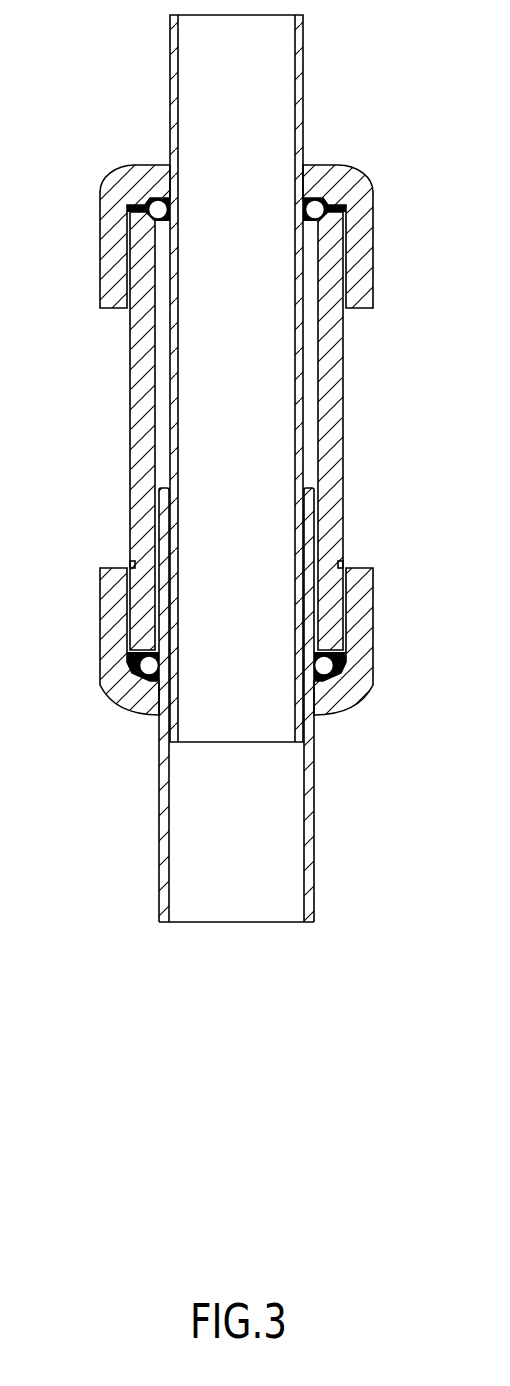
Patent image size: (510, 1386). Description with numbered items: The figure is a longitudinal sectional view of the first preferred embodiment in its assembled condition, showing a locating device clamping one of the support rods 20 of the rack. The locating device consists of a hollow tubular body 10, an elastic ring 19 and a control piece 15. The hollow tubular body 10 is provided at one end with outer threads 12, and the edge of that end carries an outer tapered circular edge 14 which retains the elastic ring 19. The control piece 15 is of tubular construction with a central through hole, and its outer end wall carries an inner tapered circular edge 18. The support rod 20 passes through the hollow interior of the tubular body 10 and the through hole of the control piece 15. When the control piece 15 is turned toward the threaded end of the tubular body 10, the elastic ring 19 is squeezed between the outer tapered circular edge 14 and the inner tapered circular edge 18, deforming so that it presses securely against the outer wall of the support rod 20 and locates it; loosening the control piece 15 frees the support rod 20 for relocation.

The hollow tubular body 10 is at (345, 437).
The outer threads 12 is at (100, 278).
The outer tapered circular edge 14 is at (130, 225).
The control piece 15 is at (373, 248).
The inner tapered circular edge 18 is at (338, 204).
The elastic ring 19 is at (150, 207).
The support rod 20 is at (170, 92).